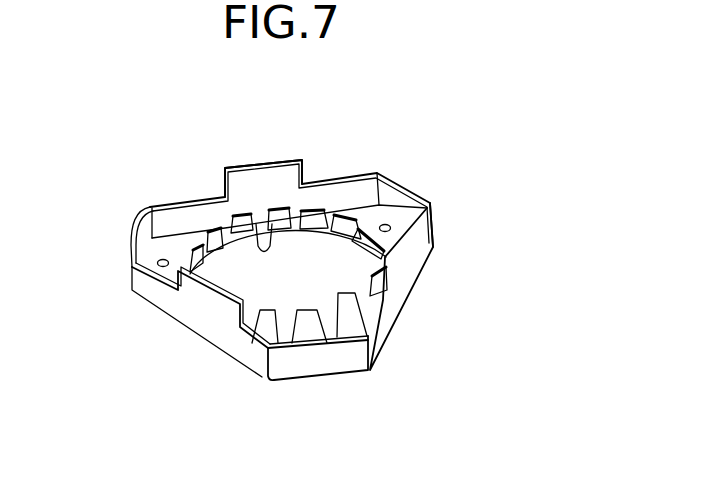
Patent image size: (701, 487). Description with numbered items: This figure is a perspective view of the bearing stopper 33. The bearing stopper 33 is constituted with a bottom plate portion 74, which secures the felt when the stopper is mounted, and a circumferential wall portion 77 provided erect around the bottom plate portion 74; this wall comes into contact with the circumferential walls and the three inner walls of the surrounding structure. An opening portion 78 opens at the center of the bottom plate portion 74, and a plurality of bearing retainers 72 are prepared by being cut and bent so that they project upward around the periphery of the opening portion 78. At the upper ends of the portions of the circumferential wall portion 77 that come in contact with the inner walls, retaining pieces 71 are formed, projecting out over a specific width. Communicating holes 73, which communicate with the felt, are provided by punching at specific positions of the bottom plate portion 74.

The bearing stopper 33 is at (362, 154).
The retaining pieces 71 is at (287, 172).
The bearing retainers 72 is at (243, 223).
The communicating holes 73 is at (157, 263).
The bottom plate portion 74 is at (172, 240).
The circumferential wall portion 77 is at (315, 368).
The opening portion 78 is at (266, 223).